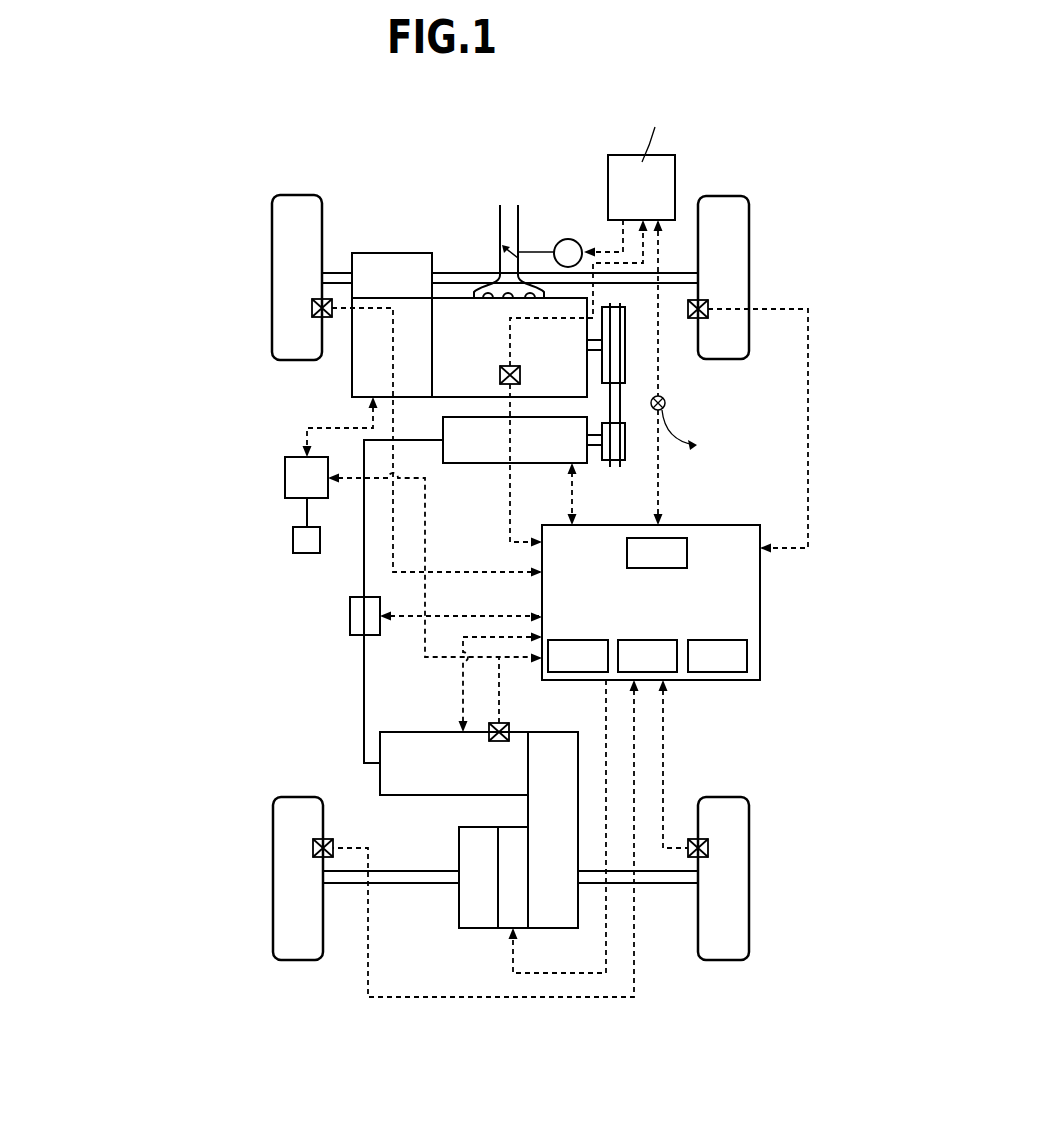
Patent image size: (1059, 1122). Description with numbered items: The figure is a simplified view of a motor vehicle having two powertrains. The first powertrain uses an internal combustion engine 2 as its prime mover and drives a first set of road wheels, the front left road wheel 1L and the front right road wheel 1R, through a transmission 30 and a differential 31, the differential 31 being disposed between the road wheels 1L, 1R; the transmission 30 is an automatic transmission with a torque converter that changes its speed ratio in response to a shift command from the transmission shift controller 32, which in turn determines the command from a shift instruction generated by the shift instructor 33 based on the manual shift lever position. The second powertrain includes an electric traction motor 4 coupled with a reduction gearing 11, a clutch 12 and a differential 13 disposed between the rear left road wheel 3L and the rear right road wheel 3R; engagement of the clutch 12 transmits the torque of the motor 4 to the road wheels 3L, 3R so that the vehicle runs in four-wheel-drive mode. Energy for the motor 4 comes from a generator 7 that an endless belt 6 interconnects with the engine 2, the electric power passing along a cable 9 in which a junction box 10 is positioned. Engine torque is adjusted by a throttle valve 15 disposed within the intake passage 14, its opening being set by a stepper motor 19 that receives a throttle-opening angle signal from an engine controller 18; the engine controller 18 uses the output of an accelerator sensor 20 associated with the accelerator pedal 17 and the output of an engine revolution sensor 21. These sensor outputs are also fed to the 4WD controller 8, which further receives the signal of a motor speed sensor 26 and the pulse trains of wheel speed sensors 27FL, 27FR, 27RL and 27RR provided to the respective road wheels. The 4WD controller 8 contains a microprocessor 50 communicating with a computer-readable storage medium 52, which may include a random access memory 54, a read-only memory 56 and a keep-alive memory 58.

The front left road wheel 1L is at (272, 240).
The front right road wheel 1R is at (749, 225).
The rear left road wheel 3L is at (273, 838).
The rear right road wheel 3R is at (749, 823).
The internal combustion engine 2 is at (446, 385).
The electric traction motor 4 is at (443, 738).
The endless belt 6 is at (620, 405).
The generator 7 is at (487, 452).
The 4WD controller 8 is at (760, 590).
The cable 9 is at (364, 740).
The junction box 10 is at (350, 615).
The reduction gearing 11 is at (680, 985).
The clutch 12 is at (508, 915).
The differential 13 is at (465, 905).
The intake passage 14 is at (497, 207).
The throttle valve 15 is at (505, 251).
The accelerator pedal 17 is at (697, 440).
The engine controller 18 is at (676, 170).
The stepper motor 19 is at (568, 239).
The accelerator sensor 20 is at (668, 403).
The engine revolution sensor 21 is at (520, 376).
The motor speed sensor 26 is at (508, 725).
The wheel speed sensor 27FL is at (313, 310).
The wheel speed sensor 27FR is at (698, 300).
The wheel speed sensor 27RL is at (313, 857).
The wheel speed sensor 27RR is at (708, 848).
The transmission 30 is at (352, 365).
The differential 31 is at (385, 262).
The transmission shift controller 32 is at (293, 488).
The shift instructor 33 is at (320, 540).
The microprocessor 50 is at (688, 553).
The computer-readable storage medium 52 is at (730, 630).
The random access memory 54 is at (590, 640).
The read-only memory 56 is at (655, 640).
The keep-alive memory 58 is at (722, 640).